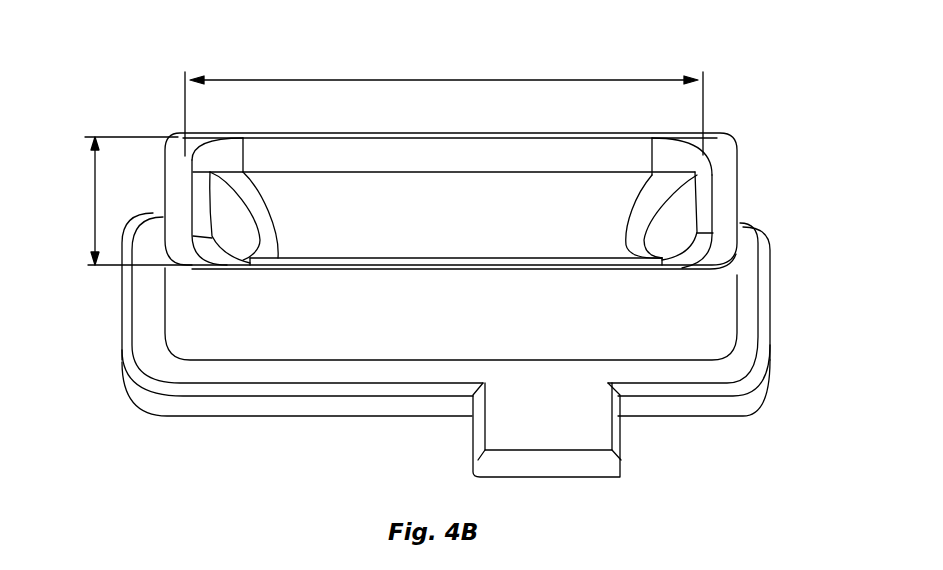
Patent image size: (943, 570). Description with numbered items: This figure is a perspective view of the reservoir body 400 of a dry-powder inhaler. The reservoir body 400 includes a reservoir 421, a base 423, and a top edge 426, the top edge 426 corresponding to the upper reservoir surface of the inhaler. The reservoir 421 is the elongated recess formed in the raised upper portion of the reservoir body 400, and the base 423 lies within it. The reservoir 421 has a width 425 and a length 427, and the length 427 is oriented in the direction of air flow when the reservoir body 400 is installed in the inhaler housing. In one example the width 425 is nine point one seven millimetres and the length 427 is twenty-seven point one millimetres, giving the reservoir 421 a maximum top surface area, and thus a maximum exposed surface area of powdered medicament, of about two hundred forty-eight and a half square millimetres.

The reservoir body 400 is at (740, 85).
The reservoir 421 is at (410, 178).
The base 423 is at (663, 215).
The width 425 is at (95, 207).
The top edge 426 is at (227, 133).
The length 427 is at (452, 80).